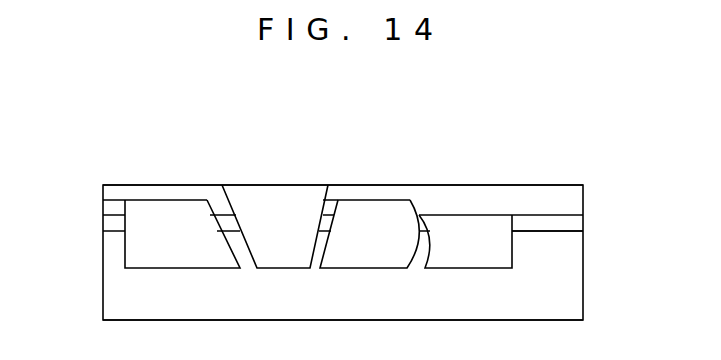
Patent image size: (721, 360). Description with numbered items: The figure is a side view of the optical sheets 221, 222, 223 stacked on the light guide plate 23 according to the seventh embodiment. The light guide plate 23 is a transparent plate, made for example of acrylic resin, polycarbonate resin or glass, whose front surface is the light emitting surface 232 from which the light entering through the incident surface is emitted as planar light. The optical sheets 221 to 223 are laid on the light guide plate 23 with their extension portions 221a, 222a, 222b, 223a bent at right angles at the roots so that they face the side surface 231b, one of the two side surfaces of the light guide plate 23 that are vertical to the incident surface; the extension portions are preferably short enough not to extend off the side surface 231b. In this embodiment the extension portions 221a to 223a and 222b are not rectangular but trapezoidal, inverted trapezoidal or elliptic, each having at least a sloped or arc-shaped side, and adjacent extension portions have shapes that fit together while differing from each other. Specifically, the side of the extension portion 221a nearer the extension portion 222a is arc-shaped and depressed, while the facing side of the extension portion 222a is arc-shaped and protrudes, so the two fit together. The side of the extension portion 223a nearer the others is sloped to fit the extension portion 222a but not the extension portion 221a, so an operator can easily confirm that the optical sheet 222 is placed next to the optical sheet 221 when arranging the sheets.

The light guide plate 23 is at (573, 277).
The optical sheet 221 is at (573, 222).
The optical sheet 222 is at (573, 207).
The optical sheet 223 is at (573, 193).
The extension portion 221a is at (465, 233).
The extension portion 222a is at (380, 210).
The extension portion 222b is at (178, 210).
The extension portion 223a is at (277, 197).
The side surface 231b is at (123, 300).
The light emitting surface 232 is at (542, 231).